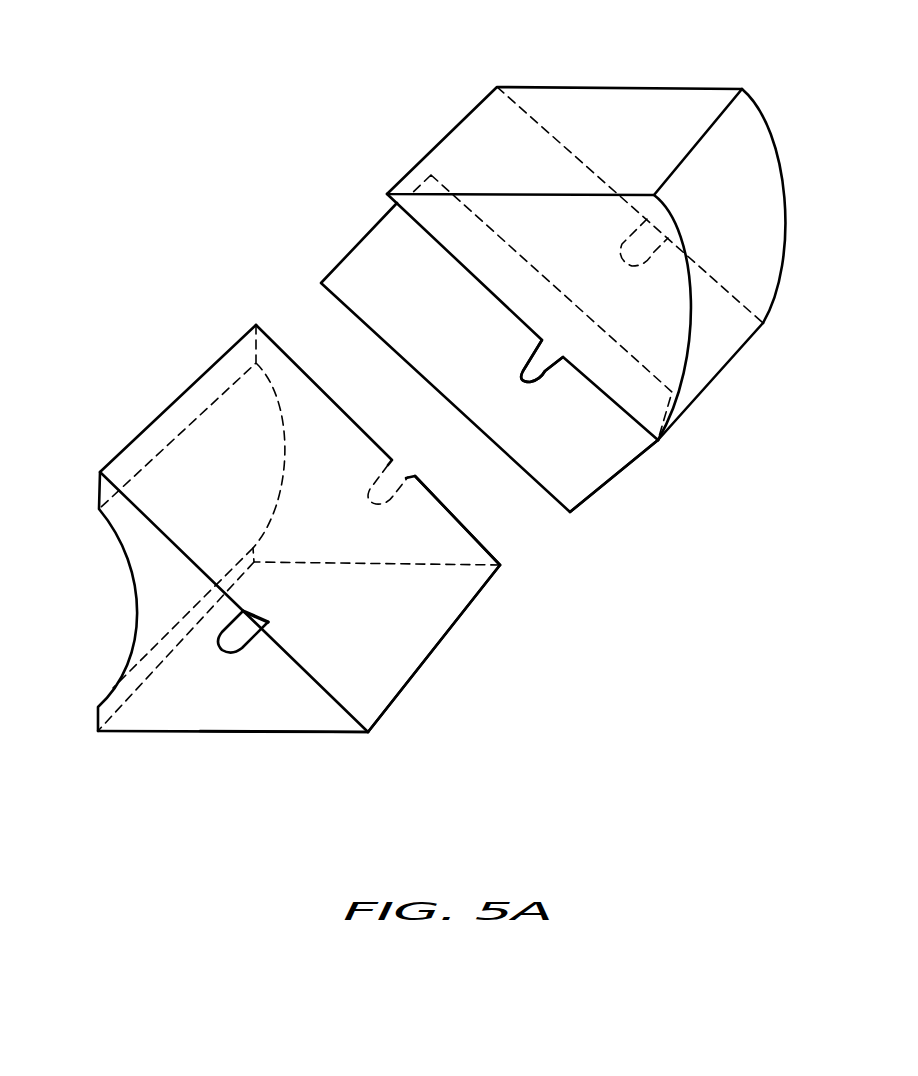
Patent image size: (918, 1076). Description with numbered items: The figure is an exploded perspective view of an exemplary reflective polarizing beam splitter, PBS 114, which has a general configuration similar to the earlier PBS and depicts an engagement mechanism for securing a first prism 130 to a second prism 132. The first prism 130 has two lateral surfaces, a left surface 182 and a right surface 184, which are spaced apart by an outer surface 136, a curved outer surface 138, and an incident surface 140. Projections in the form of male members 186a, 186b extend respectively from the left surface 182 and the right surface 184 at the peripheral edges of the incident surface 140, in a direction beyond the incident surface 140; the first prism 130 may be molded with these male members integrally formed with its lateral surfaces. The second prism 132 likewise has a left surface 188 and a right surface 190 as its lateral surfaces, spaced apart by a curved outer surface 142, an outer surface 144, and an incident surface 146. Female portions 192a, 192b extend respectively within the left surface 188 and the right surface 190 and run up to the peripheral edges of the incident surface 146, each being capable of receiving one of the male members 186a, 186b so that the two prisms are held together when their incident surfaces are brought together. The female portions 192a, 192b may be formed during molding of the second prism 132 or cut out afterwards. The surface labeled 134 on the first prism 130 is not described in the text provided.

The PBS 114 is at (193, 170).
The first prism 130 is at (690, 60).
The second prism 132 is at (227, 798).
The mating face of upper body 134 is at (355, 267).
The outer surface 136 is at (610, 105).
The curved outer surface 138 is at (763, 190).
The incident surface 140 is at (712, 355).
The curved outer surface 142 is at (152, 560).
The outer surface 144 is at (213, 710).
The incident surface 146 is at (434, 630).
The left surface 182 is at (658, 440).
The right surface 184 is at (763, 247).
The male member 186a is at (527, 367).
The male member 186b is at (618, 252).
The left surface 188 is at (302, 713).
The right surface 190 is at (443, 545).
The female portion 192a is at (273, 605).
The female portion 192b is at (408, 462).